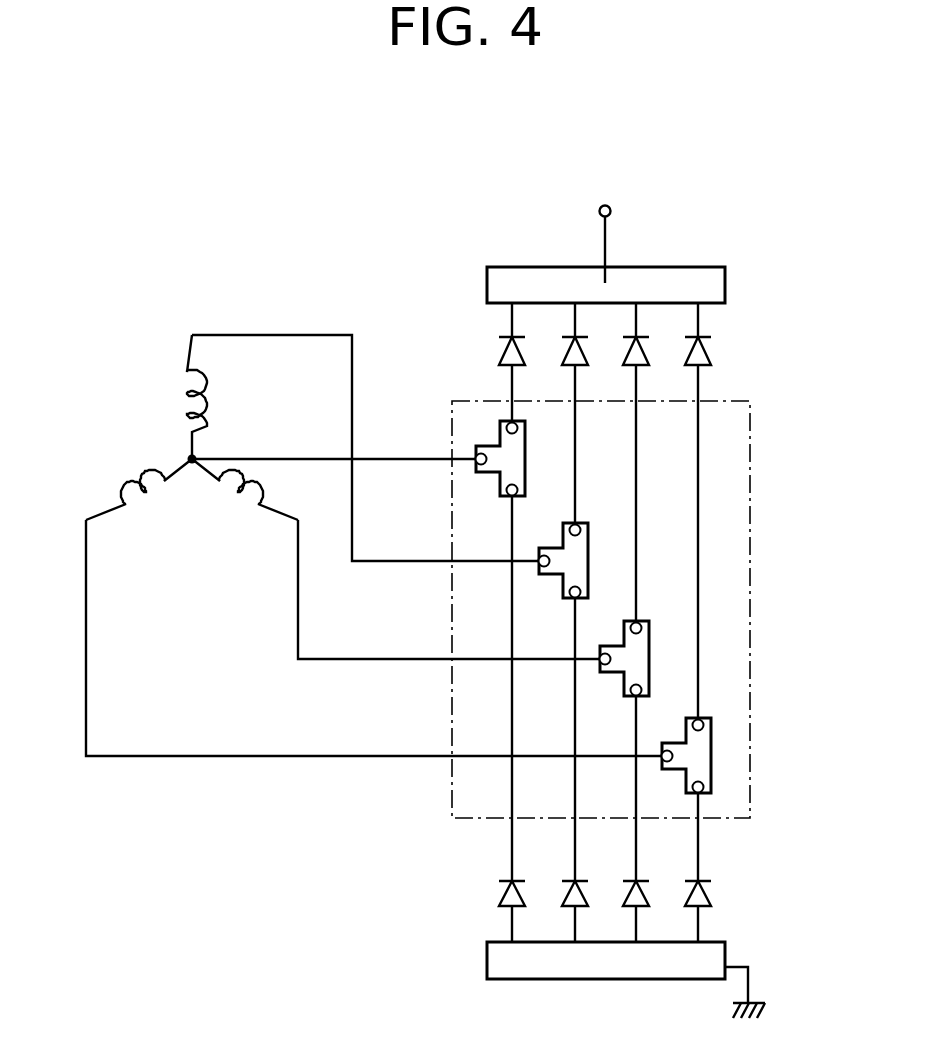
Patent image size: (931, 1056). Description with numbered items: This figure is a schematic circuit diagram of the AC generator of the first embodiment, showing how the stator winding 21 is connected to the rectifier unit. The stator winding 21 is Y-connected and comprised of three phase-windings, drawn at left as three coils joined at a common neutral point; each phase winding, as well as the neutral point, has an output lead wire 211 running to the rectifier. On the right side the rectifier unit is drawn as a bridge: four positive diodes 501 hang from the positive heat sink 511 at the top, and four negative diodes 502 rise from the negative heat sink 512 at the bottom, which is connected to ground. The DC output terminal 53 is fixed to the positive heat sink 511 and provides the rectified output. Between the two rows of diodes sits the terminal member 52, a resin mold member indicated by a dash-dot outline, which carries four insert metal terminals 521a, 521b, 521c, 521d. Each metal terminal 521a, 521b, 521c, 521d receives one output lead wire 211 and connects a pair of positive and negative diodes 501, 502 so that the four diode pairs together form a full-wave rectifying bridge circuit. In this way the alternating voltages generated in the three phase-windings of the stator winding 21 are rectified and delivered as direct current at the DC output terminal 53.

The stator winding 21 is at (163, 453).
The output lead wire 211 is at (401, 462).
The DC output terminal 53 is at (611, 208).
The positive heat sink 511 is at (695, 276).
The positive diode 501 is at (709, 352).
The terminal member 52 is at (728, 400).
The metal terminal 521a is at (518, 462).
The metal terminal 521b is at (578, 565).
The metal terminal 521c is at (638, 661).
The metal terminal 521d is at (698, 760).
The negative diode 502 is at (709, 898).
The negative heat sink 512 is at (713, 956).